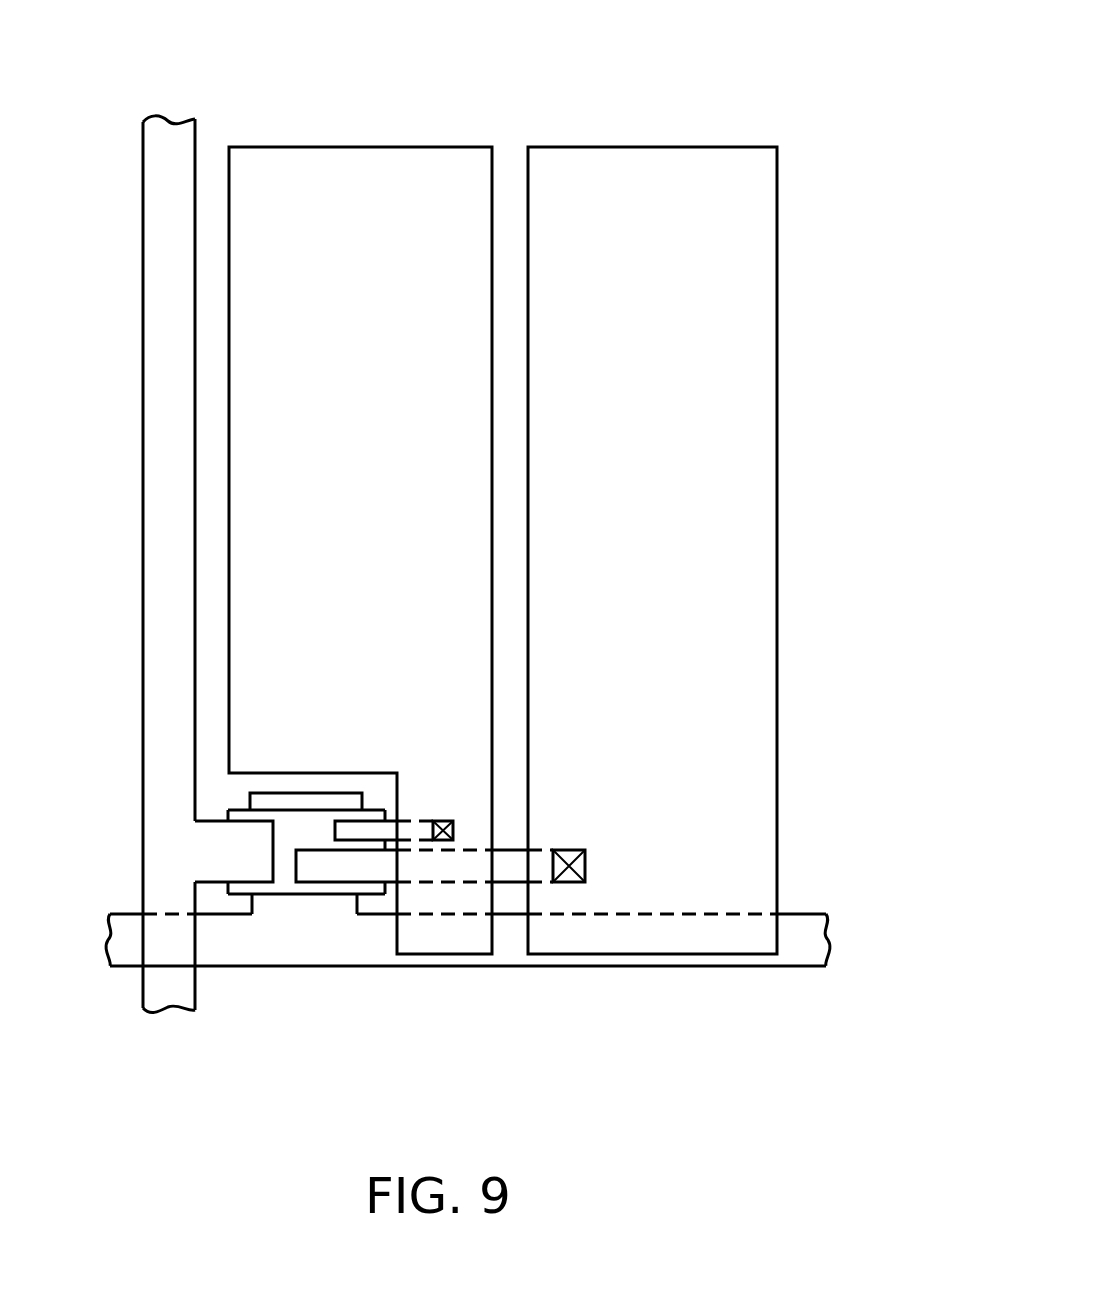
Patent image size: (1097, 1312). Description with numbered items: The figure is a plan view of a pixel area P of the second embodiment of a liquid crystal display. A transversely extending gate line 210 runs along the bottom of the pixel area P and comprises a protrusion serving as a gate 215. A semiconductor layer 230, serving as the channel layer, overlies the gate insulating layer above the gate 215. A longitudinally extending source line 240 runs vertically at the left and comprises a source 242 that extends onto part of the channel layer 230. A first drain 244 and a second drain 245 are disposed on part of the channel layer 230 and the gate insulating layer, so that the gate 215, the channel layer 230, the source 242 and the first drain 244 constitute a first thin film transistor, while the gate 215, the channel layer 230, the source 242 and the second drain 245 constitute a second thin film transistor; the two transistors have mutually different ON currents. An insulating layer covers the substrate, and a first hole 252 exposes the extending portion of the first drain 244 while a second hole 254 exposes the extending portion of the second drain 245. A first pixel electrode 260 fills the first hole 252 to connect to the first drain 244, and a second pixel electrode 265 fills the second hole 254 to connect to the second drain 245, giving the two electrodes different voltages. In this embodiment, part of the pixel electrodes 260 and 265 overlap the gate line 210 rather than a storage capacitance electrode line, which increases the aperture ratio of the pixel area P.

The gate line 210 is at (810, 947).
The gate 215 is at (270, 792).
The semiconductor layer 230 is at (240, 810).
The source line 240 is at (162, 998).
The source 242 is at (260, 855).
The first drain 244 is at (325, 873).
The second drain 245 is at (352, 827).
The first hole 252 is at (560, 882).
The second hole 254 is at (445, 841).
The first pixel electrode 260 is at (653, 147).
The second pixel electrode 265 is at (363, 147).
The pixel area P is at (788, 123).